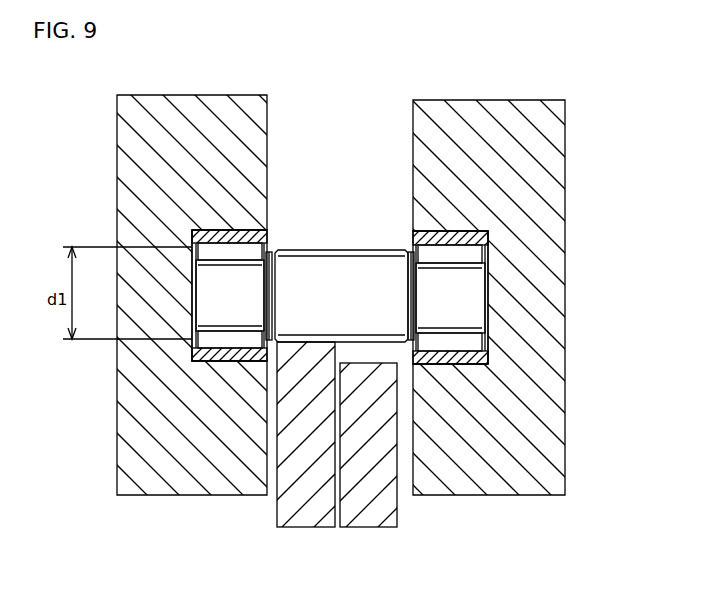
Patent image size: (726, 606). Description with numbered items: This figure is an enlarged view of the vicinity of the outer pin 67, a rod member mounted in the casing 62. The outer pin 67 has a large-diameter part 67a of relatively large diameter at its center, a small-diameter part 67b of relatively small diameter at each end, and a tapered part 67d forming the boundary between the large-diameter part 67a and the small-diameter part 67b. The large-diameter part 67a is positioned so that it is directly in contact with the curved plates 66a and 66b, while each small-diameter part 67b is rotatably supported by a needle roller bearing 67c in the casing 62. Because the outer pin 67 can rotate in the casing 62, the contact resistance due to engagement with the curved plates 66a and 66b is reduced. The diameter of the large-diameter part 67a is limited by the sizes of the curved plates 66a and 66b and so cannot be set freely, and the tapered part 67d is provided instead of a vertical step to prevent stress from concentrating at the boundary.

The casing 62 is at (534, 188).
The curved plate 66a is at (368, 500).
The curved plate 66b is at (303, 500).
The outer pin 67 is at (363, 303).
The large-diameter part 67a is at (339, 253).
The small-diameter part 67b is at (232, 297).
The needle roller bearing 67c is at (223, 228).
The tapered part 67d is at (268, 252).